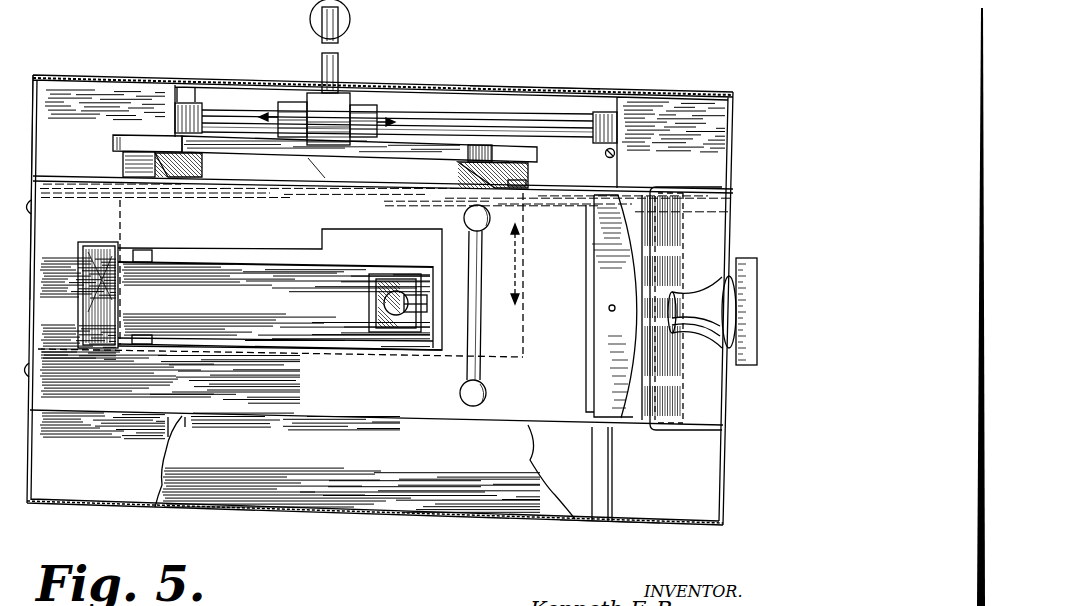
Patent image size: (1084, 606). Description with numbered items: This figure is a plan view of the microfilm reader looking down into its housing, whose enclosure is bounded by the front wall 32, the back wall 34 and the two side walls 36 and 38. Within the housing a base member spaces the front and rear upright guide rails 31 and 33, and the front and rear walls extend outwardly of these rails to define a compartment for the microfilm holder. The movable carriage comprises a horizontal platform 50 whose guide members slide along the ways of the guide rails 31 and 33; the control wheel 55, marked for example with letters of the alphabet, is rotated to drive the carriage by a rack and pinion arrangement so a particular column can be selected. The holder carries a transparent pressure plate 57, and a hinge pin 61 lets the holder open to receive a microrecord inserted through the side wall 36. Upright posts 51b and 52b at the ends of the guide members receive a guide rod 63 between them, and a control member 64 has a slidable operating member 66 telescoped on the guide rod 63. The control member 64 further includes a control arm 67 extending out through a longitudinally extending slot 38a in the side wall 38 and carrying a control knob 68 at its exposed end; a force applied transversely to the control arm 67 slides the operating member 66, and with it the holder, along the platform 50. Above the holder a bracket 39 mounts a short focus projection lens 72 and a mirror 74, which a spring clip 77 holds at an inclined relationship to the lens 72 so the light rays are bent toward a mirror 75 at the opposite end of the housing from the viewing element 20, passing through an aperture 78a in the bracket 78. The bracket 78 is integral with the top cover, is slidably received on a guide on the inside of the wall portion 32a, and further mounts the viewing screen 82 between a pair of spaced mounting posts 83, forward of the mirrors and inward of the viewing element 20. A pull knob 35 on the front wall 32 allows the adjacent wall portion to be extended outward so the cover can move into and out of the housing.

The viewing element 20 is at (618, 229).
The front upright guide rail 31 is at (600, 447).
The front wall 32 is at (727, 499).
The wall portion 32a is at (695, 408).
The rear upright guide rail 33 is at (177, 413).
The back wall 34 is at (33, 110).
The pull knob 35 is at (710, 295).
The side wall 36 is at (618, 528).
The side wall 38 is at (680, 91).
The longitudinally extending slot 38a is at (521, 87).
The bracket 39 is at (335, 286).
The horizontal platform 50 is at (606, 167).
The upright post 51b is at (193, 101).
The upright post 52b is at (603, 111).
The control wheel 55 is at (743, 366).
The transparent pressure plate 57 is at (443, 178).
The hinge pin 61 is at (114, 143).
The guide rod 63 is at (457, 113).
The control member 64 is at (297, 66).
The slidable operating member 66 is at (378, 108).
The control arm 67 is at (341, 59).
The control knob 68 is at (310, 15).
The short focus projection lens 72 is at (387, 328).
The mirror 74 is at (382, 294).
The mirror 75 is at (112, 242).
The spring clip 77 is at (427, 303).
The bracket 78 is at (72, 194).
The aperture 78a is at (203, 252).
The viewing screen 82 is at (482, 312).
The mounting posts 83 is at (480, 214).